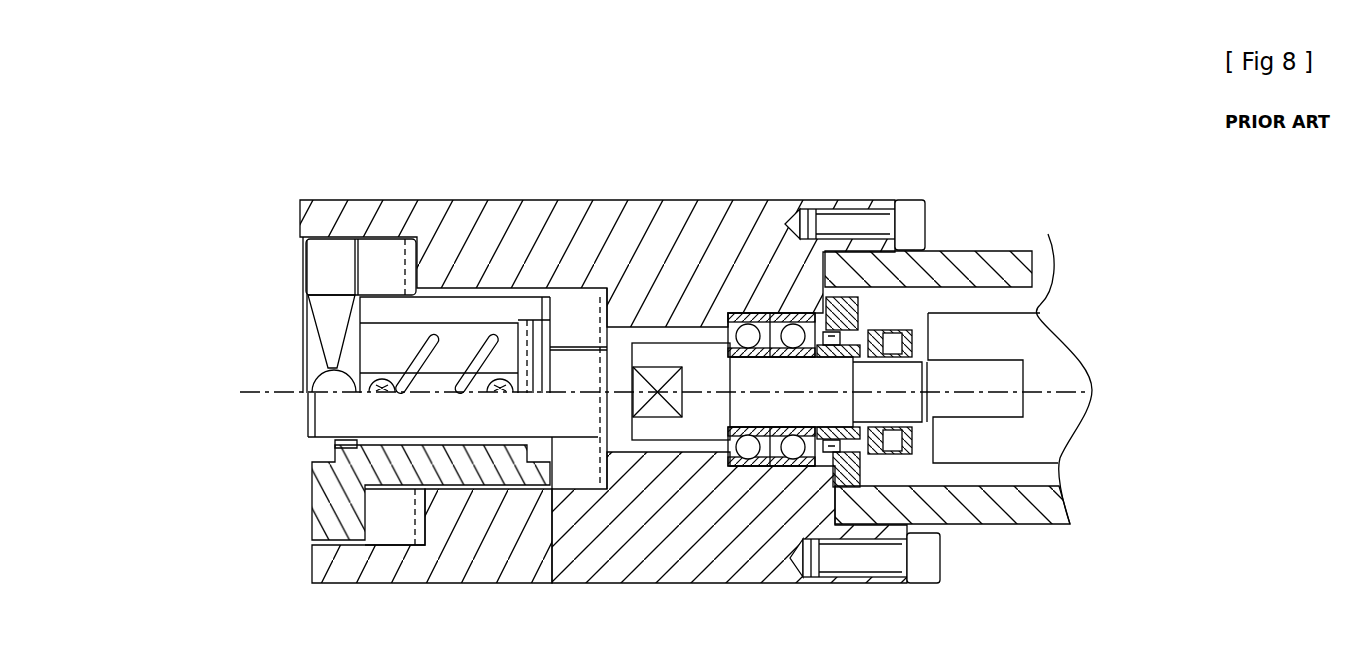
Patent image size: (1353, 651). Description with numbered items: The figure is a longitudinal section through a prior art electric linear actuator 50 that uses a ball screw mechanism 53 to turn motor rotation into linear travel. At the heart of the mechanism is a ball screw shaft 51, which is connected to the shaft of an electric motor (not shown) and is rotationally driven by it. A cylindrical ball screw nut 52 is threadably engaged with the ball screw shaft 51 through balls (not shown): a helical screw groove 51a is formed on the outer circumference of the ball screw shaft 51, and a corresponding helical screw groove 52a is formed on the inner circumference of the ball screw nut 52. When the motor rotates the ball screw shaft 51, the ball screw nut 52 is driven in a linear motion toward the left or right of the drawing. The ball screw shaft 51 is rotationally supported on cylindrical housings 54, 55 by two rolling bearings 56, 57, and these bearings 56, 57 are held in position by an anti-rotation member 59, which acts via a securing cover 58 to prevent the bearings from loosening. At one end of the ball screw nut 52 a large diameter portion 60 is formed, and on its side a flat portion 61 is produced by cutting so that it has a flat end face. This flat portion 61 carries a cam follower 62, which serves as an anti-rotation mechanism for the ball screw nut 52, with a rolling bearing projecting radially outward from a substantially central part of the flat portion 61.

The electric linear actuator 50 is at (651, 355).
The ball screw shaft 51 is at (1022, 334).
The helical screw groove 51a is at (563, 437).
The ball screw nut 52 is at (294, 250).
The helical screw groove 52a is at (382, 445).
The ball screw mechanism 53 is at (328, 408).
The cylindrical housing 54 is at (788, 212).
The cylindrical housing 55 is at (983, 271).
The rolling bearing 56 is at (748, 462).
The rolling bearing 57 is at (853, 482).
The securing cover 58 is at (897, 545).
The anti-rotation member 59 is at (905, 335).
The large diameter portion 60 is at (335, 258).
The flat portion 61 is at (328, 343).
The cam follower 62 is at (300, 392).